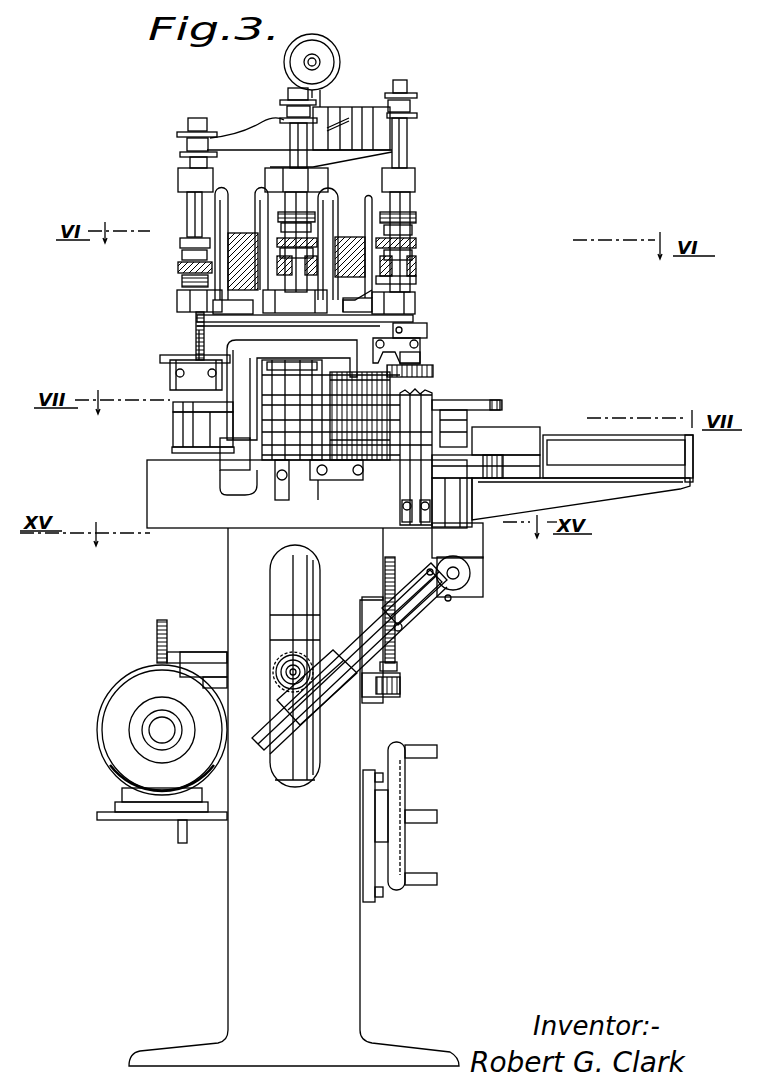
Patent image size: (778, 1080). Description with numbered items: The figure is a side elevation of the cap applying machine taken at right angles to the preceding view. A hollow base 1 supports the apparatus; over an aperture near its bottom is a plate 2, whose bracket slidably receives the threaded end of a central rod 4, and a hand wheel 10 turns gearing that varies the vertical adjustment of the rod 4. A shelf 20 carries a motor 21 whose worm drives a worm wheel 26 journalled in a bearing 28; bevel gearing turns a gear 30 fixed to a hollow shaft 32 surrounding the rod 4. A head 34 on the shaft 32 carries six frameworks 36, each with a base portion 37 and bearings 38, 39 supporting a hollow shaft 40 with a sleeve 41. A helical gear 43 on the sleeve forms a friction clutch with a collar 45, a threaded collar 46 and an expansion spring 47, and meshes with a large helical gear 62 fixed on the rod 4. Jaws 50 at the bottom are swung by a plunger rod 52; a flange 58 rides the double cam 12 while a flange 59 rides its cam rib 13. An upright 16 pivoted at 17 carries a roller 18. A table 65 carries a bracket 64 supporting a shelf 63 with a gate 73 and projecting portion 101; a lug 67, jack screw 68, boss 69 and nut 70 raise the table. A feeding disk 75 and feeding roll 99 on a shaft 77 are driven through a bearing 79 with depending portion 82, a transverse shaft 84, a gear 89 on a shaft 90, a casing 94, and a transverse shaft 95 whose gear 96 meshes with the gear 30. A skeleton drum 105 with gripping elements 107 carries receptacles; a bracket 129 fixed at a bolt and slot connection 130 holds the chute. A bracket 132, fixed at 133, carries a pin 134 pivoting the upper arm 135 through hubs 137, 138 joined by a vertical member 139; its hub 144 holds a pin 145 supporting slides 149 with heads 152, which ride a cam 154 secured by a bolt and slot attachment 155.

The hollow base 1 is at (294, 797).
The plate 2 is at (376, 900).
The rod 4 is at (298, 780).
The hand wheel 10 is at (422, 878).
The double cam 12 is at (340, 110).
The cam rib 13 is at (356, 118).
The upright 16 is at (324, 94).
The pivot 17 is at (318, 62).
The roller 18 is at (322, 42).
The shelf 20 is at (142, 818).
The motor 21 is at (98, 718).
The worm wheel 26 is at (157, 633).
The bearing 28 is at (206, 648).
The gear 30 is at (295, 627).
The hollow shaft 32 is at (272, 608).
The head 34 is at (395, 318).
The framework 36 is at (356, 202).
The base portion 37 is at (245, 306).
The upper bearing 38 is at (178, 178).
The lower bearing 39 is at (372, 313).
The hollow shaft 40 is at (410, 153).
The sleeve 41 is at (416, 262).
The helical gear 43 is at (178, 266).
The collar 45 is at (423, 240).
The threaded collar 46 is at (416, 215).
The expansion spring 47 is at (412, 230).
The jaw 50 is at (421, 358).
The plunger rod 52 is at (404, 84).
The flange 58 is at (282, 102).
The flange 59 is at (424, 118).
The helical gear 62 is at (350, 238).
The shelf 63 is at (693, 473).
The bracket 64 is at (655, 488).
The table 65 is at (147, 515).
The lug 67 is at (420, 620).
The jack screw 68 is at (395, 655).
The boss 69 is at (400, 692).
The nut 70 is at (397, 666).
The gate 73 is at (618, 456).
The feeding disk 75 is at (487, 470).
The shaft 77 is at (480, 402).
The bearing 79 is at (470, 533).
The depending portion 82 is at (483, 582).
The transverse shaft 84 is at (455, 575).
The gear 89 is at (448, 600).
The shaft 90 is at (400, 632).
The casing 94 is at (322, 702).
The transverse shaft 95 is at (286, 674).
The gear 96 is at (275, 665).
The feeding roll 99 is at (502, 403).
The projecting portion 101 is at (525, 432).
The skeleton drum 105 is at (176, 407).
The gripping element 107 is at (185, 428).
The bracket 129 is at (420, 430).
The bolt and slot connection 130 is at (407, 522).
The bracket 132 is at (228, 485).
The bolt and slot connection 133 is at (282, 500).
The pin 134 is at (162, 358).
The upper arm 135 is at (232, 342).
The hub 137 is at (196, 340).
The hub 138 is at (235, 455).
The vertical member 139 is at (170, 380).
The hub 144 is at (410, 325).
The pin 145 is at (408, 348).
The slide 149 is at (380, 416).
The head 152 is at (433, 371).
The cam 154 is at (345, 482).
The bolt and slot attachment 155 is at (318, 500).